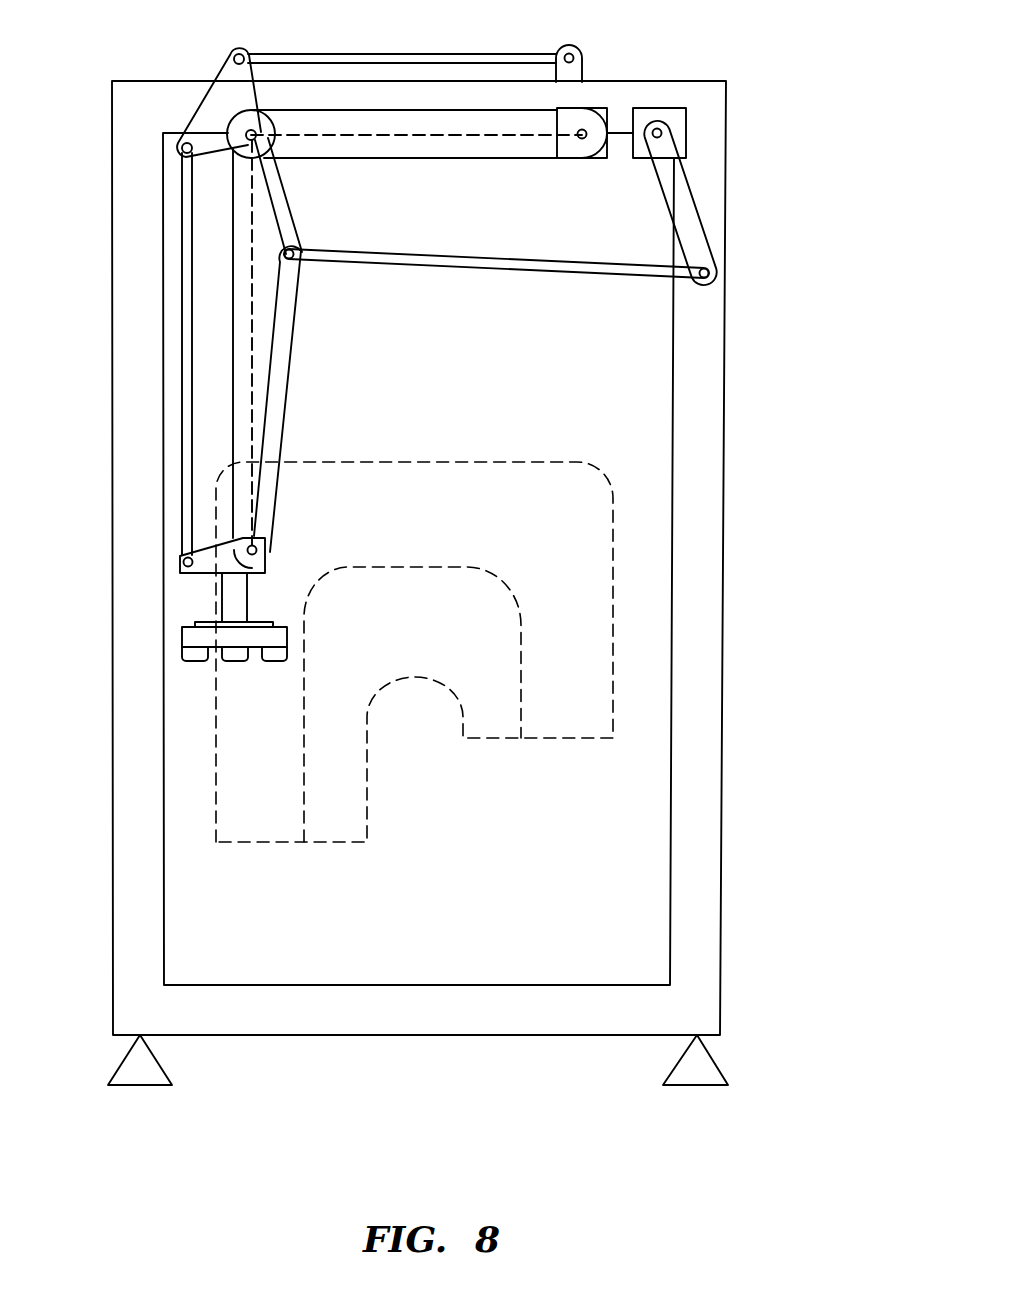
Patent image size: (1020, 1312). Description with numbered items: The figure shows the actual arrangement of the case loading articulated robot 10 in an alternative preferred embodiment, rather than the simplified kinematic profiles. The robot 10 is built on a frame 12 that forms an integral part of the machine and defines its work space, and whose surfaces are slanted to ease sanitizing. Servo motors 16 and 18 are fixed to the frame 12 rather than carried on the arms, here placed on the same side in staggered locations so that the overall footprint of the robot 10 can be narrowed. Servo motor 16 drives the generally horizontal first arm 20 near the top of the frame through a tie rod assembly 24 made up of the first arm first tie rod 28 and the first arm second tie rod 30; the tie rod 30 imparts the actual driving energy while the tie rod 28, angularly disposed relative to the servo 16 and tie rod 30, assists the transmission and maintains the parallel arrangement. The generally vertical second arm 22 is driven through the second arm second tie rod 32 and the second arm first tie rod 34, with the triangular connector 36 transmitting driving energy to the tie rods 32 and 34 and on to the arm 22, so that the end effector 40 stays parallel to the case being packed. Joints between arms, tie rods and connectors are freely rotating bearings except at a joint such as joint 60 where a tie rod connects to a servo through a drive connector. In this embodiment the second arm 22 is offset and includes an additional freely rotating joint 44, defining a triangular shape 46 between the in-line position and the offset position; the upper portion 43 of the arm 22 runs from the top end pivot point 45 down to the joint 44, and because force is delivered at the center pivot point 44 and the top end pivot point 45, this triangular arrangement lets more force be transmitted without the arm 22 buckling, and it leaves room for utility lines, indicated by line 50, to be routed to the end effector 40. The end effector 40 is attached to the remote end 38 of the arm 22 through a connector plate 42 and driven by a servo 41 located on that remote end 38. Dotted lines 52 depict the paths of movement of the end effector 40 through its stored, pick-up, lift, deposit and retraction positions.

The case loading articulated robot 10 is at (748, 329).
The frame 12 is at (713, 557).
The servo motor 16 is at (603, 108).
The servo motor 18 is at (677, 117).
The first arm 20 is at (453, 150).
The second arm 22 is at (320, 399).
The tie rod assembly 24 is at (348, 333).
The first arm first tie rod 28 is at (685, 213).
The first arm second tie rod 30 is at (485, 267).
The second arm second tie rod 32 is at (382, 53).
The second arm first tie rod 34 is at (188, 333).
The triangular connector 36 is at (228, 70).
The remote end 38 is at (247, 576).
The end effector 40 is at (282, 637).
The servo 41 is at (255, 622).
The connector plate 42 is at (202, 567).
The upper arm segment 43 is at (280, 213).
The freely rotating joint 44 is at (297, 247).
The top end pivot point 45 is at (233, 115).
The triangular shape 46 is at (285, 303).
The line 50 is at (373, 137).
The dotted lines 52 is at (612, 517).
The joint 60 is at (582, 140).